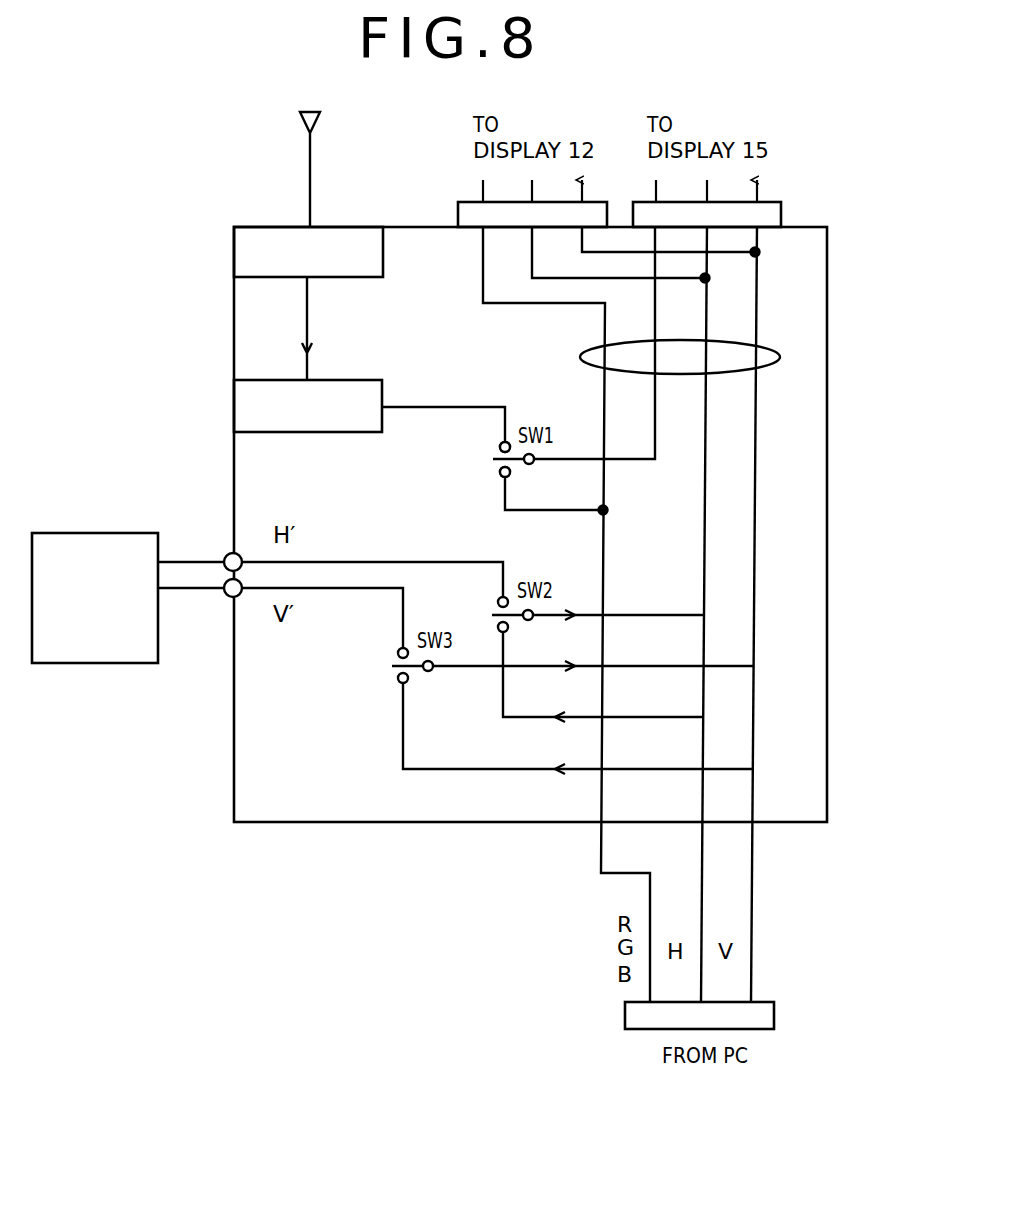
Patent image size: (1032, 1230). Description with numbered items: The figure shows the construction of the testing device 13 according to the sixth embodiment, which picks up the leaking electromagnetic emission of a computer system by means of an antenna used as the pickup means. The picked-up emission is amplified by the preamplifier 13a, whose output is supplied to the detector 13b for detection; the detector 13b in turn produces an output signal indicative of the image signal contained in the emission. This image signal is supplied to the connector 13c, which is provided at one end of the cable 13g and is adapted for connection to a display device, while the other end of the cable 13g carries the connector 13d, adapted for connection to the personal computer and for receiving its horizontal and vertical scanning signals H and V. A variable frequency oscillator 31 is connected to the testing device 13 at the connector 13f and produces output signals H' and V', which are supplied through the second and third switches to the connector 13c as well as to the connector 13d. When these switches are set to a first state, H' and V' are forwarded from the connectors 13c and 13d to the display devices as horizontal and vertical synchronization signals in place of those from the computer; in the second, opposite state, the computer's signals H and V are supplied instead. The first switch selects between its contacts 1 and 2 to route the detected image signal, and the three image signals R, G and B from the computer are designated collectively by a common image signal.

The testing device 13 is at (827, 300).
The preamplifier 13a is at (333, 279).
The detector 13b is at (333, 434).
The connector 13c is at (458, 213).
The connector 13d is at (781, 215).
The connector 13f is at (227, 550).
The cable 13g is at (580, 357).
The variable frequency oscillator 31 is at (80, 533).
The switch SW1 contact 1 is at (496, 444).
The switch SW1 contact 2 is at (496, 477).